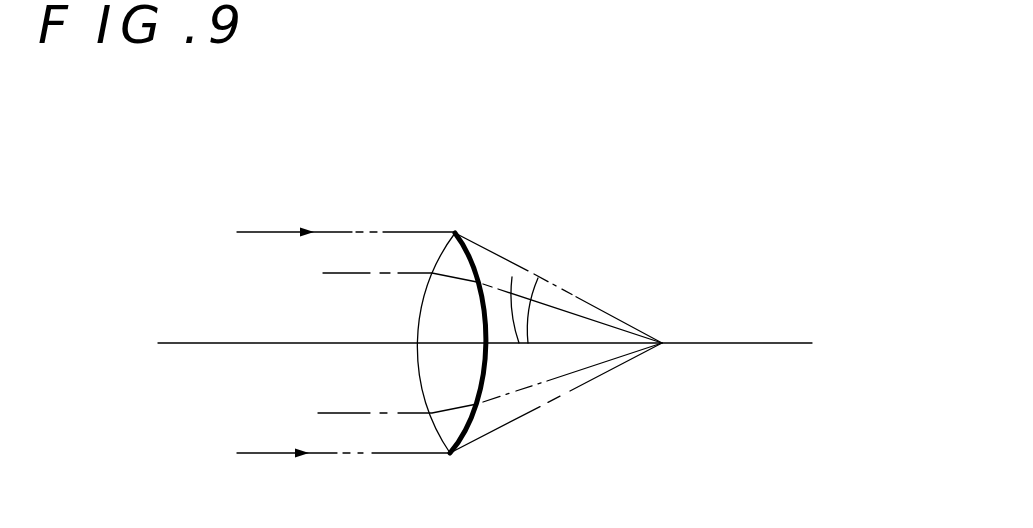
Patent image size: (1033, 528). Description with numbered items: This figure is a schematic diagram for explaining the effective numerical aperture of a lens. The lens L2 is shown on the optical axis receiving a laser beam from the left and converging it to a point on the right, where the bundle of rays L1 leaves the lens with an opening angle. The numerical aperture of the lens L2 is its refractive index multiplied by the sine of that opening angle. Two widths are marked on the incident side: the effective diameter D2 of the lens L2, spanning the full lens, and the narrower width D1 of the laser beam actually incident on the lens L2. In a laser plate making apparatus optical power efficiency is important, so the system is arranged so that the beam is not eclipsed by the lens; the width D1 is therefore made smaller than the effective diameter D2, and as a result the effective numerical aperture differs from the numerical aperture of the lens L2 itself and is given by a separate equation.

The bundle of rays L1 is at (577, 292).
The lens L2 is at (458, 253).
The width of the laser beam incident on the lens D1 is at (398, 277).
The effective diameter of the lens D2 is at (258, 449).